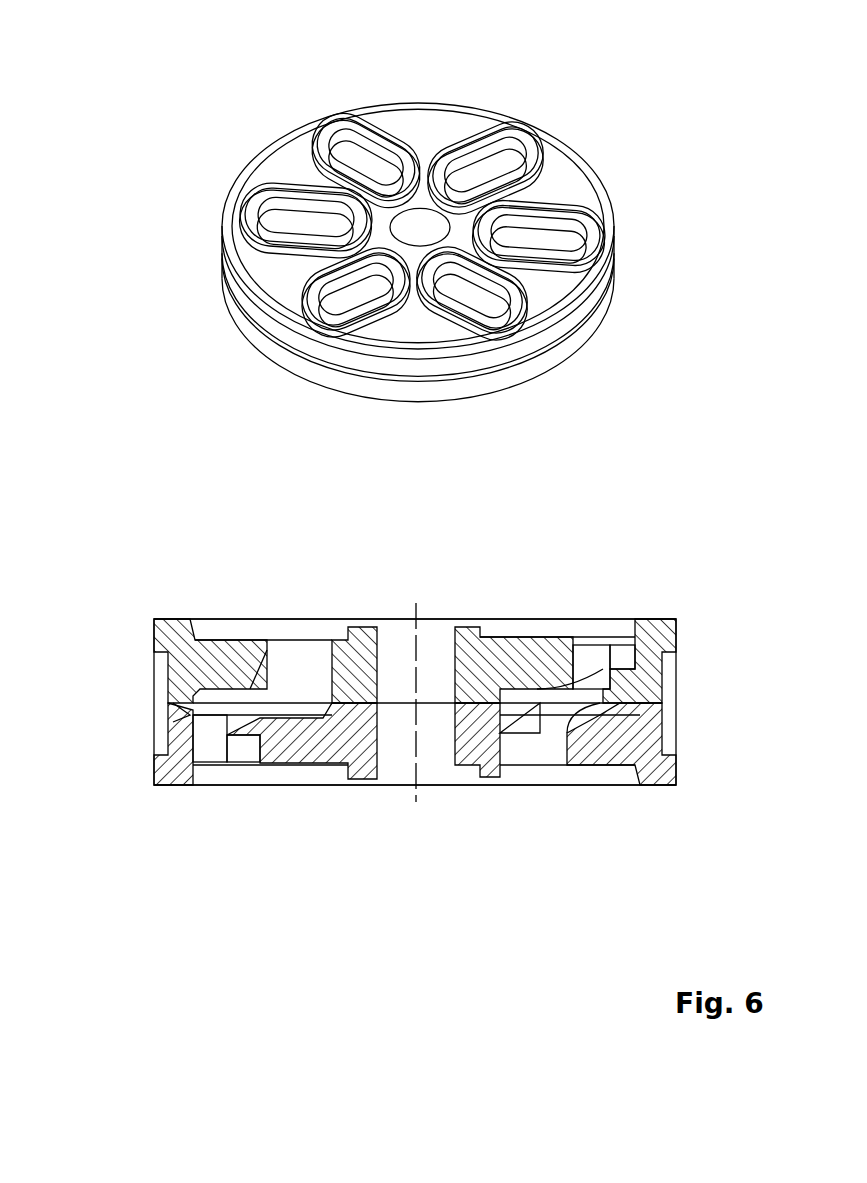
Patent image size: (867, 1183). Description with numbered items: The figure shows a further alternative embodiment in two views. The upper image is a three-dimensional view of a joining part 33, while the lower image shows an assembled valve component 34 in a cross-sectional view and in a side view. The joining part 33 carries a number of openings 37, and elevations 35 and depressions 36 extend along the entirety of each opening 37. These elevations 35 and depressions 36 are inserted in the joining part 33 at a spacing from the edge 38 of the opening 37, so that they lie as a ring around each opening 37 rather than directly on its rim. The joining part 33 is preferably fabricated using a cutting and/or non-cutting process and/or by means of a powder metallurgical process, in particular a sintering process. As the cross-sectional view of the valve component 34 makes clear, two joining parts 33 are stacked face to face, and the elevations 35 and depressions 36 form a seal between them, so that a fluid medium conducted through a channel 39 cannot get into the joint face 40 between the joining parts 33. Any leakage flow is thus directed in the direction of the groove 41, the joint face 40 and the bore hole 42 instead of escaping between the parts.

The joining part 33 is at (230, 165).
The valve component 34 is at (193, 612).
The elevations 35 is at (527, 125).
The depressions 36 is at (593, 238).
The openings 37 is at (560, 208).
The edge of the opening 38 is at (257, 210).
The channel 39 is at (522, 702).
The joint face 40 is at (283, 263).
The groove 41 is at (660, 713).
The bore hole 42 is at (403, 747).